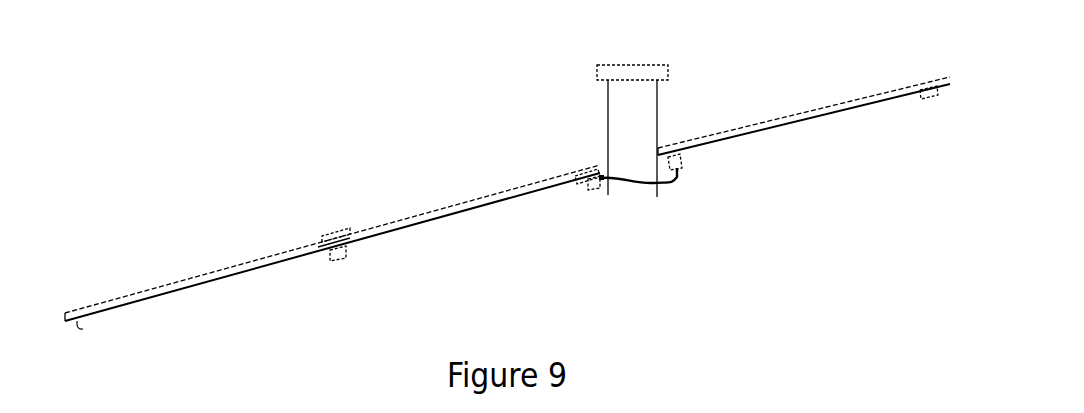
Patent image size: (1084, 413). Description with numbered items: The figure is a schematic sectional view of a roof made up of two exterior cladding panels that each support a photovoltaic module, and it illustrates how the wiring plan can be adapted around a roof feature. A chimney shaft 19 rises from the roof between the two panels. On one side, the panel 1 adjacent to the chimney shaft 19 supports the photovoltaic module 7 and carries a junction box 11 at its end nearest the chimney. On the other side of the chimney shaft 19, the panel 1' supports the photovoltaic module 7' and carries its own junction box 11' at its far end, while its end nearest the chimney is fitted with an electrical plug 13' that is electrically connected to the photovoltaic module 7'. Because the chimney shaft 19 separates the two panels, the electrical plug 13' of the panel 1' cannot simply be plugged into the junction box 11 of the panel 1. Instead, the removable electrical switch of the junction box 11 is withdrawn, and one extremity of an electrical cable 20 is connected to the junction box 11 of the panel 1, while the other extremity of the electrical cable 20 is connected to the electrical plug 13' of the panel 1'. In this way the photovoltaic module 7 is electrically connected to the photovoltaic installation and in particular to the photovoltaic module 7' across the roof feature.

The panel 1 is at (332, 251).
The photovoltaic module 7 is at (332, 241).
The junction box 11 is at (588, 207).
The chimney shaft 19 is at (608, 108).
The electrical cable 20 is at (678, 185).
The electrical plug 13' is at (705, 174).
The panel 1' is at (804, 127).
The photovoltaic module 7' is at (804, 109).
The junction box 11' is at (920, 120).